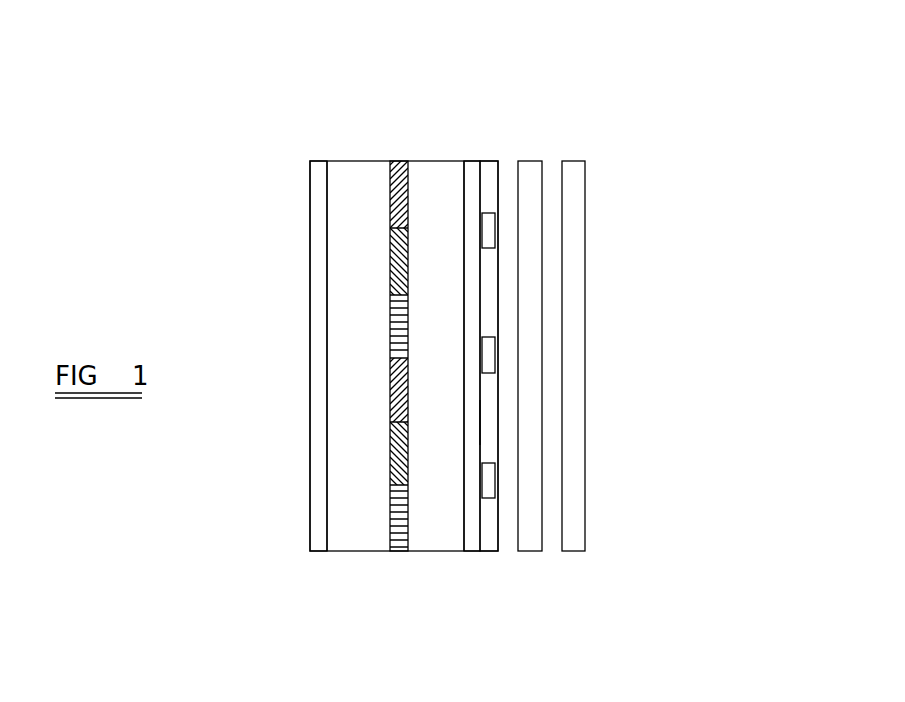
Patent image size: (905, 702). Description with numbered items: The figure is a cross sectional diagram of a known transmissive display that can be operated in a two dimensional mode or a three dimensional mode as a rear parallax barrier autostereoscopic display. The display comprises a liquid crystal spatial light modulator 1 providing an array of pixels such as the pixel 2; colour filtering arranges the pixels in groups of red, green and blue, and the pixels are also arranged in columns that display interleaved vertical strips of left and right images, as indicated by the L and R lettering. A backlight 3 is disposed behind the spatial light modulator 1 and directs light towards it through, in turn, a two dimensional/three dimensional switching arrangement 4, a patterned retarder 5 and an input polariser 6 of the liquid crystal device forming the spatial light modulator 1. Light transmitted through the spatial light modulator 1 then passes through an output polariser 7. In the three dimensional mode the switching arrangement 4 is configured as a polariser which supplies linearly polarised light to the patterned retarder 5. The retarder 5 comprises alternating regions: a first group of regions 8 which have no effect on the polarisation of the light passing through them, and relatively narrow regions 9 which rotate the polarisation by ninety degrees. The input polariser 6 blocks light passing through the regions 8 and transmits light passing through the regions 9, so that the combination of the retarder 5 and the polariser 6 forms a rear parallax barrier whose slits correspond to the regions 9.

The liquid crystal spatial light modulator 1 is at (353, 569).
The pixel 2 is at (390, 370).
The backlight 3 is at (600, 567).
The 2D/3D switching arrangement 4 is at (700, 128).
The patterned retarder 5 is at (486, 570).
The input polariser 6 is at (517, 88).
The output polariser 7 is at (314, 143).
The first group of regions 8 is at (480, 422).
The relatively narrow regions 9 is at (485, 355).